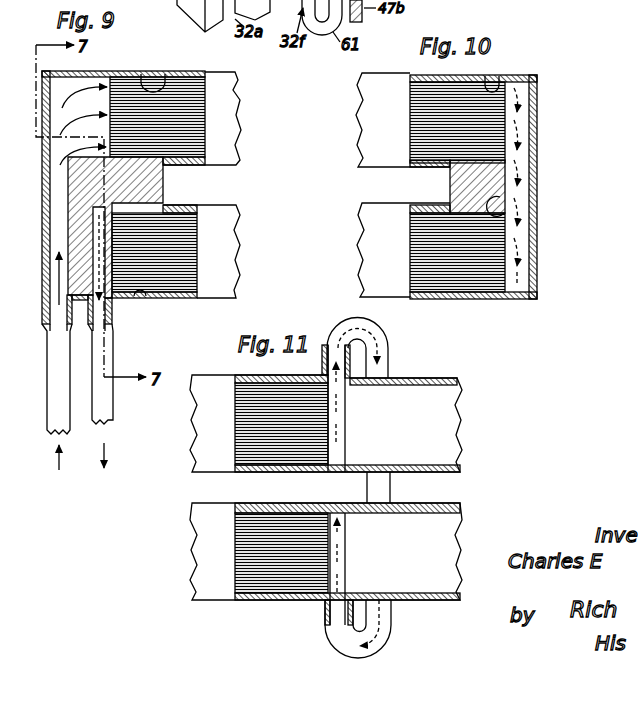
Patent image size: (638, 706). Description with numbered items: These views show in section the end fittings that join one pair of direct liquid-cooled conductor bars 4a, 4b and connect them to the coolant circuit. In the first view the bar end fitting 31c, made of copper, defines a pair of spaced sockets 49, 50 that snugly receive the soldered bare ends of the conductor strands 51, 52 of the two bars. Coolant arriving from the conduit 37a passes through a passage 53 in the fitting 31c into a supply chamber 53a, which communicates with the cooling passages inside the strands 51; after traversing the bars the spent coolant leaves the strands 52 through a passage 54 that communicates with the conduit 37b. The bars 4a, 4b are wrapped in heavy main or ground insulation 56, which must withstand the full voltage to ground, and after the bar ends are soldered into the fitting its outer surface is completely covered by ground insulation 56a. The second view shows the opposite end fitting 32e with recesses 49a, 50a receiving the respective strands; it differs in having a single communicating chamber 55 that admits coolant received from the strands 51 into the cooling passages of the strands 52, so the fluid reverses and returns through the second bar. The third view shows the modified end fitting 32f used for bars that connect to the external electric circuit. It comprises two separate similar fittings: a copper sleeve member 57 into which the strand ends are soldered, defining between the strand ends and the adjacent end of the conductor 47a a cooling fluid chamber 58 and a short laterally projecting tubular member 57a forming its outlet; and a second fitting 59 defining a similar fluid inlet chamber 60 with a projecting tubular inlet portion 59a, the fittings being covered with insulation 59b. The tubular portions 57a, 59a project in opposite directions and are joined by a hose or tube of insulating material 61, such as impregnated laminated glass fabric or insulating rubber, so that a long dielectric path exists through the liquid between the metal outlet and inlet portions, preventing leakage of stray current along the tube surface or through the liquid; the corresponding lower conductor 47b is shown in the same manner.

In FIG. 9, the conductor bar 4a is at (244, 83).
In FIG. 10, the conductor bar 4a is at (351, 136).
In FIG. 9, the conductor bar 4b is at (233, 212).
In FIG. 10, the conductor bar 4b is at (352, 260).
In FIG. 9, the bar end fitting 31c is at (159, 183).
In FIG. 10, the opposite end fitting 32e is at (460, 180).
In FIG. 11, the end fitting 32f is at (318, 609).
In FIG. 9, the coolant conduit 37a is at (50, 421).
In FIG. 9, the coolant conduit 37b is at (113, 412).
In FIG. 11, the conductor 47a is at (456, 416).
In FIG. 11, the lower plate 47b is at (462, 536).
In FIG. 9, the socket 49 is at (174, 73).
In FIG. 10, the recess 49a is at (489, 79).
In FIG. 9, the socket 50 is at (141, 298).
In FIG. 10, the recess 50a is at (502, 208).
In FIG. 9, the conductor strand 51 is at (195, 128).
In FIG. 10, the conductor strand 51 is at (417, 127).
In FIG. 11, the conductor strand 51 is at (245, 410).
In FIG. 9, the conductor strand 52 is at (190, 256).
In FIG. 10, the conductor strand 52 is at (492, 240).
In FIG. 11, the conductor strand 52 is at (262, 565).
In FIG. 9, the inlet passage 53 is at (53, 308).
In FIG. 9, the supply chamber 53a is at (108, 109).
In FIG. 9, the outlet passage 54 is at (108, 318).
In FIG. 10, the communicating chamber 55 is at (538, 187).
In FIG. 9, the ground insulation 56 is at (201, 72).
In FIG. 10, the ground insulation 56 is at (422, 73).
In FIG. 9, the ground insulation covering 56a is at (107, 71).
In FIG. 10, the ground insulation covering 56a is at (537, 103).
In FIG. 11, the copper sleeve member 57 is at (355, 468).
In FIG. 11, the tubular outlet member 57a is at (322, 362).
In FIG. 11, the cooling fluid chamber 58 is at (347, 428).
In FIG. 11, the fitting 59 is at (368, 506).
In FIG. 11, the tubular inlet portion 59a is at (345, 612).
In FIG. 11, the insulation 59b is at (393, 377).
In FIG. 11, the fluid inlet chamber 60 is at (347, 555).
In FIG. 11, the insulating tube 61 is at (388, 633).